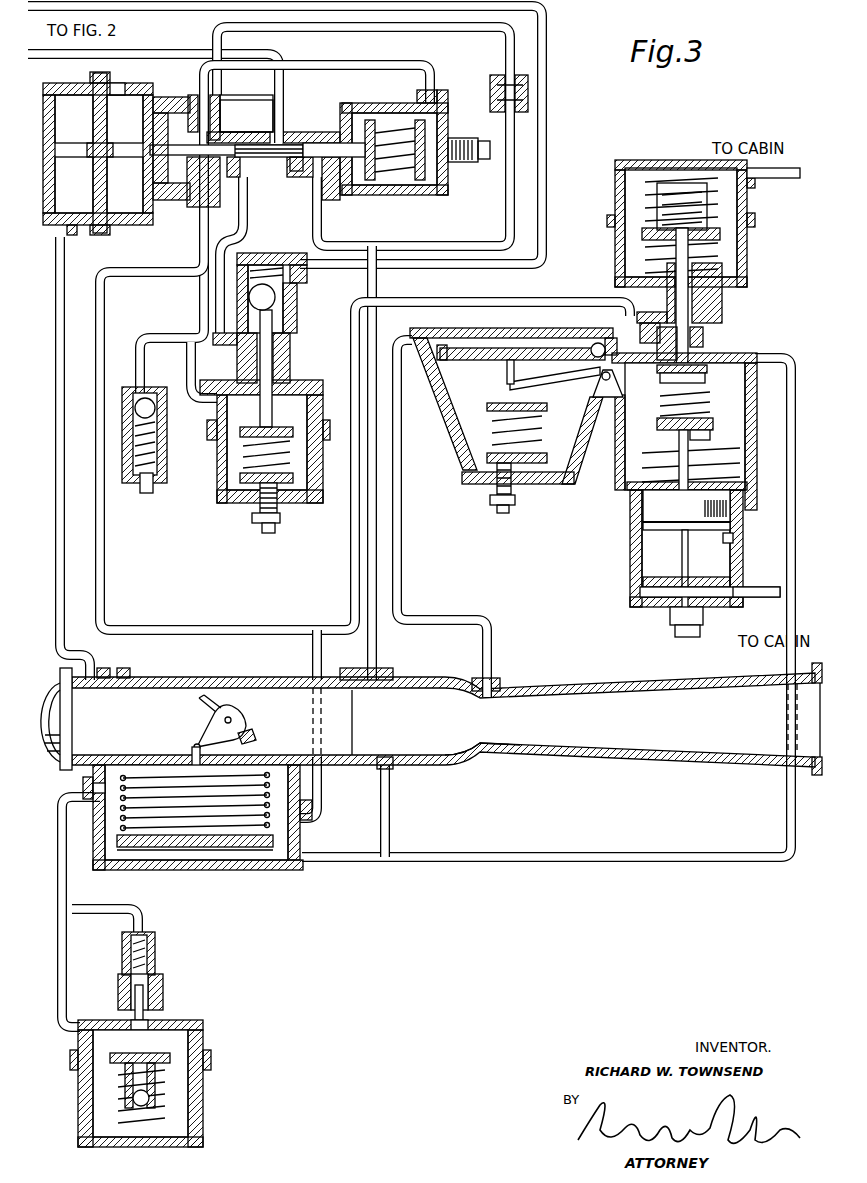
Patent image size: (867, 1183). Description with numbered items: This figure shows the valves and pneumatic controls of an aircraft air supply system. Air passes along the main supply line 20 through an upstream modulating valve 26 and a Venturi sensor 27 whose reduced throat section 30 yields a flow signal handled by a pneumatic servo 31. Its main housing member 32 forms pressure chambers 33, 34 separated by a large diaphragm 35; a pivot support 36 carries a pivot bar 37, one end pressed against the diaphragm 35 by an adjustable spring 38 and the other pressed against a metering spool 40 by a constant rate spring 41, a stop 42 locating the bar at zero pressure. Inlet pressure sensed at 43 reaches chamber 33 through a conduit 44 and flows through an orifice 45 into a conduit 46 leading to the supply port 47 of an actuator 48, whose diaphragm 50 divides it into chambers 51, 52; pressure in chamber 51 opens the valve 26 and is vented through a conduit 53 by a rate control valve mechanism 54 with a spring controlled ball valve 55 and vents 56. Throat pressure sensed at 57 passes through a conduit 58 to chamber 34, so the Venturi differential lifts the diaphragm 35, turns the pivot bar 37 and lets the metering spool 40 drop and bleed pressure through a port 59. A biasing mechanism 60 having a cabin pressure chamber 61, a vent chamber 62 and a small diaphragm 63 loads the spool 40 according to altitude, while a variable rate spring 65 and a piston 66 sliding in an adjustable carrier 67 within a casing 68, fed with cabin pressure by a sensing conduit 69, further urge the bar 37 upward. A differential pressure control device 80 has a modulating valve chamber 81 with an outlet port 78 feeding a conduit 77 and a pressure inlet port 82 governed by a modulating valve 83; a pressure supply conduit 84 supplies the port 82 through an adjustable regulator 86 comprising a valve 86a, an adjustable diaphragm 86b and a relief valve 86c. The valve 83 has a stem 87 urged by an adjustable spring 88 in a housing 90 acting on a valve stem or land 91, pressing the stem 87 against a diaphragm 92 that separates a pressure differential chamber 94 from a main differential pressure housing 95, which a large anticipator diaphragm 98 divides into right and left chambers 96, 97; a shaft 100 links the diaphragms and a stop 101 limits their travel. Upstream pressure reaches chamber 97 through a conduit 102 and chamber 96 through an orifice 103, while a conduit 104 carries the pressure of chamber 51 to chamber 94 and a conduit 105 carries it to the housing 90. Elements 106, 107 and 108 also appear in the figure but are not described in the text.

The main supply line 20 is at (188, 662).
The modulating valve 26 is at (248, 727).
The Venturi sensor 27 is at (630, 767).
The reduced throat section 30 is at (490, 745).
The pneumatic servo 31 is at (605, 458).
The main housing member 32 is at (463, 455).
The pressure chamber 33 is at (445, 395).
The pressure chamber 34 is at (470, 330).
The diaphragm 35 is at (545, 350).
The pivot support 36 is at (615, 385).
The pivot bar 37 is at (540, 378).
The adjustable spring 38 is at (555, 425).
The metering spool 40 is at (688, 338).
The constant rate spring 41 is at (725, 408).
The stop 42 is at (710, 370).
The Venturi inlet sensing point 43 is at (393, 768).
The conduit 44 is at (788, 350).
The orifice 45 is at (677, 357).
The conduit 46 is at (580, 302).
The supply port 47 is at (300, 818).
The actuator 48 is at (275, 850).
The diaphragm 50 is at (155, 850).
The chamber 51 is at (110, 787).
The chamber 52 is at (300, 870).
The conduit 53 is at (68, 888).
The rate control valve mechanism 54 is at (195, 1108).
The spring controlled ball valve 55 is at (150, 982).
The vents 56 is at (125, 1000).
The throat pressure sensing point 57 is at (480, 700).
The conduit 58 is at (403, 565).
The port 59 is at (722, 307).
The biasing mechanism 60 is at (683, 160).
The cabin pressure chamber 61 is at (632, 190).
The vent chamber 62 is at (632, 250).
The diaphragm 63 is at (632, 230).
The variable rate spring 65 is at (725, 460).
The piston 66 is at (680, 512).
The adjustable carrier 67 is at (735, 535).
The housing 68 is at (630, 540).
The sensing conduit 69 is at (778, 590).
The conduit 77 is at (147, 50).
The outlet port 78 is at (283, 130).
The differential pressure control device 80 is at (225, 102).
The modulating valve chamber 81 is at (290, 163).
The pressure inlet port 82 is at (243, 163).
The modulating valve 83 is at (222, 145).
The pressure supply conduit 84 is at (545, 40).
The adjustable regulator 86 is at (213, 325).
The valve 86a is at (275, 300).
The adjustable diaphragm 86b is at (265, 427).
The relief valve 86c is at (165, 465).
The stem 87 is at (193, 158).
The adjustable spring 88 is at (390, 178).
The housing 90 is at (388, 92).
The valve stem 91 is at (310, 143).
The diaphragm 92 is at (170, 130).
The pressure differential chamber 94 is at (165, 103).
The main differential pressure housing 95 is at (125, 225).
The right chamber 96 is at (117, 100).
The left chamber 97 is at (78, 97).
The anticipator diaphragm 98 is at (93, 178).
The shaft 100 is at (143, 170).
The stop 101 is at (110, 140).
The conduit 102 is at (65, 255).
The orifice 103 is at (90, 135).
The conduit 104 is at (200, 240).
The conduit 105 is at (353, 62).
The conduit 106 is at (345, 215).
The conduit 107 is at (508, 185).
The restrictor 108 is at (490, 95).